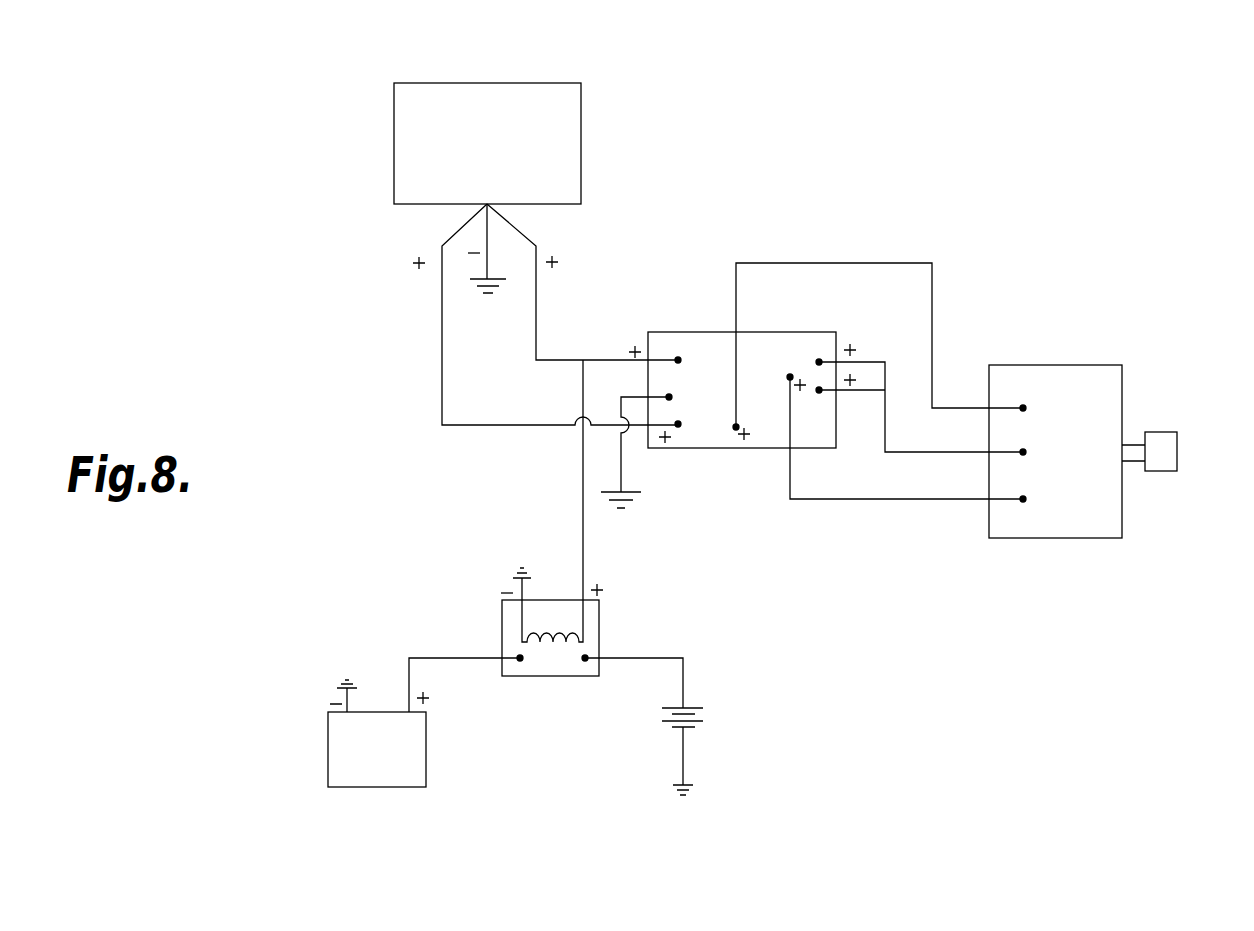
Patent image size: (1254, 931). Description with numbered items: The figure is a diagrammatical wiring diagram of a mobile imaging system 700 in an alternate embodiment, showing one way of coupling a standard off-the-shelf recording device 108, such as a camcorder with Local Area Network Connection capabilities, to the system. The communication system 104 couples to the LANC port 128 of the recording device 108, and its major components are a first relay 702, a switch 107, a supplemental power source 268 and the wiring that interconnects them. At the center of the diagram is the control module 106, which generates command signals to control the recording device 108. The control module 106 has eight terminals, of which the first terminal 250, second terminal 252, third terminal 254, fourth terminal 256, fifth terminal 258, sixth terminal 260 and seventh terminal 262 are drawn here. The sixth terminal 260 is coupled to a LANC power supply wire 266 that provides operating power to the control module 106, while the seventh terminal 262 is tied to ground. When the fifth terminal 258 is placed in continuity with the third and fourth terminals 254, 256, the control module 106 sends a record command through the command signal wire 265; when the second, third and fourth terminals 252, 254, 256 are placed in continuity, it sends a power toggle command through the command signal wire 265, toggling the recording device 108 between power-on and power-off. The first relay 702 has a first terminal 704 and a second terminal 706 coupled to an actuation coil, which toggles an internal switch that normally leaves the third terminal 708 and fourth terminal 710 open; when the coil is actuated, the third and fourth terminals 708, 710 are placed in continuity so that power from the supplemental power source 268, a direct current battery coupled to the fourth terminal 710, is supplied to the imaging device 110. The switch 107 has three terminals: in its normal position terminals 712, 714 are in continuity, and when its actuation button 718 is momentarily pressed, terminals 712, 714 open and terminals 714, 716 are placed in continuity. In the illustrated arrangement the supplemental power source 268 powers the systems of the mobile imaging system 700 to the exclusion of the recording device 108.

The communication system 104 is at (957, 204).
The control module 106 is at (699, 340).
The switch 107 is at (1122, 522).
The recording device 108 is at (435, 83).
The imaging device 110 is at (328, 738).
The LANC port 128 is at (487, 204).
The first terminal 250 is at (676, 356).
The second terminal 252 is at (790, 377).
The third terminal 254 is at (819, 362).
The fourth terminal 256 is at (819, 390).
The fifth terminal 258 is at (736, 427).
The sixth terminal 260 is at (678, 427).
The seventh terminal 262 is at (669, 397).
The command signal wire 265 is at (536, 305).
The LANC power supply wire 266 is at (443, 372).
The supplemental power source 268 is at (703, 713).
The mobile imaging system 700 is at (855, 631).
The first relay 702 is at (600, 628).
The first terminal 704 is at (580, 600).
The second terminal 706 is at (524, 600).
The third terminal 708 is at (520, 660).
The fourth terminal 710 is at (585, 660).
The terminal 712 is at (1023, 408).
The terminal 714 is at (1023, 452).
The terminal 716 is at (1023, 499).
The actuation button 718 is at (1177, 455).